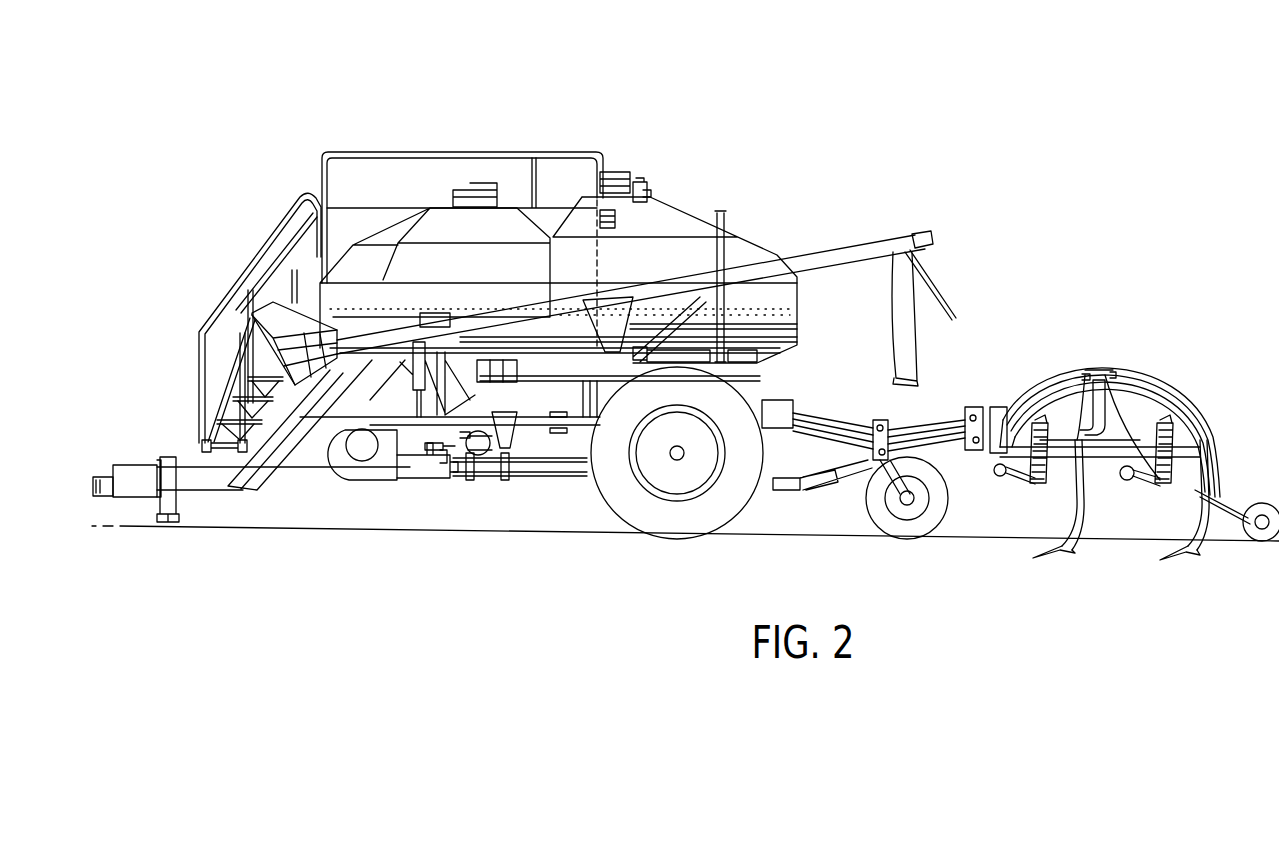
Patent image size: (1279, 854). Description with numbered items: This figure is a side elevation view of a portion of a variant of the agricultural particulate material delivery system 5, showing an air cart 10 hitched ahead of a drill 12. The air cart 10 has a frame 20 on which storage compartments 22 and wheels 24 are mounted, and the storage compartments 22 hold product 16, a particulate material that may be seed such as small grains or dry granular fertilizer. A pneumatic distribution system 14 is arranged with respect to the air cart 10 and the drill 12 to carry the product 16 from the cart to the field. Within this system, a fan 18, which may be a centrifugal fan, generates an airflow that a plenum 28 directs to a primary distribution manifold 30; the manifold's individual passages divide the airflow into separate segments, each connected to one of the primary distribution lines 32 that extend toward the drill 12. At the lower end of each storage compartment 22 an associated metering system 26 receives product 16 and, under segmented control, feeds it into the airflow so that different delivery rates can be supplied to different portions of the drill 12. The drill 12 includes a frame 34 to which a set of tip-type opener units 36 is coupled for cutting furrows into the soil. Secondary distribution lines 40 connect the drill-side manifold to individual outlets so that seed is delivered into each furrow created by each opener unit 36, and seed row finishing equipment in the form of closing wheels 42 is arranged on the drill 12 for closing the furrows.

The agricultural particulate material delivery system 5 is at (162, 131).
The air cart 10 is at (484, 63).
The drill 12 is at (1112, 320).
The pneumatic distribution system 14 is at (440, 491).
The product 16 is at (776, 297).
The fan 18 is at (353, 459).
The frame 20 is at (197, 465).
The storage compartment 22 is at (445, 228).
The wheels 24 is at (680, 510).
The metering system 26 is at (508, 482).
The plenum 28 is at (406, 478).
The primary distribution manifold 30 is at (475, 497).
The primary distribution lines 32 is at (560, 470).
The frame 34 is at (1100, 460).
The opener units 36 is at (1057, 558).
The secondary distribution lines 40 is at (1027, 407).
The closing wheels 42 is at (1258, 496).